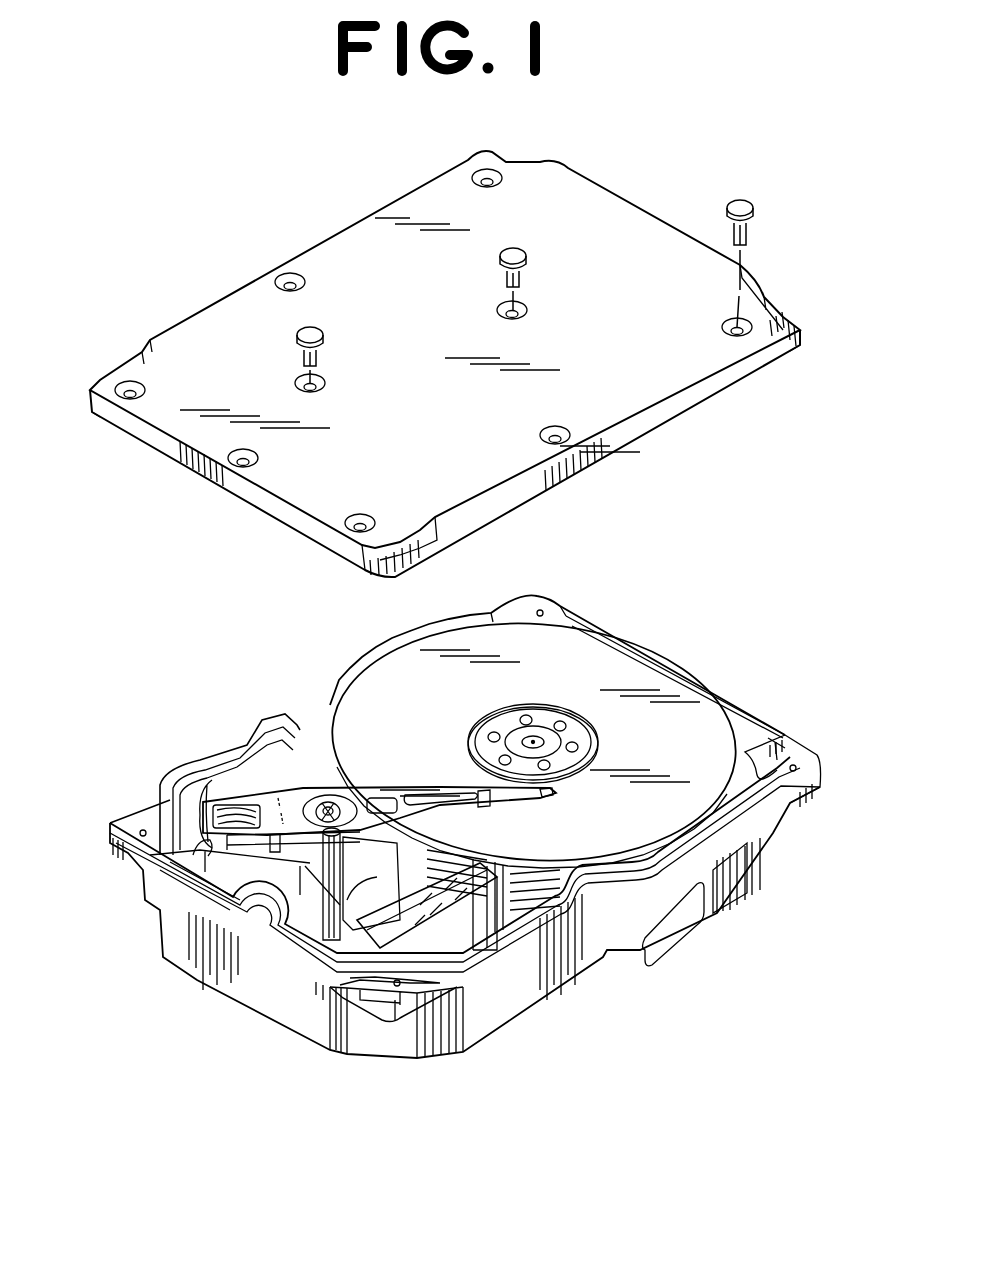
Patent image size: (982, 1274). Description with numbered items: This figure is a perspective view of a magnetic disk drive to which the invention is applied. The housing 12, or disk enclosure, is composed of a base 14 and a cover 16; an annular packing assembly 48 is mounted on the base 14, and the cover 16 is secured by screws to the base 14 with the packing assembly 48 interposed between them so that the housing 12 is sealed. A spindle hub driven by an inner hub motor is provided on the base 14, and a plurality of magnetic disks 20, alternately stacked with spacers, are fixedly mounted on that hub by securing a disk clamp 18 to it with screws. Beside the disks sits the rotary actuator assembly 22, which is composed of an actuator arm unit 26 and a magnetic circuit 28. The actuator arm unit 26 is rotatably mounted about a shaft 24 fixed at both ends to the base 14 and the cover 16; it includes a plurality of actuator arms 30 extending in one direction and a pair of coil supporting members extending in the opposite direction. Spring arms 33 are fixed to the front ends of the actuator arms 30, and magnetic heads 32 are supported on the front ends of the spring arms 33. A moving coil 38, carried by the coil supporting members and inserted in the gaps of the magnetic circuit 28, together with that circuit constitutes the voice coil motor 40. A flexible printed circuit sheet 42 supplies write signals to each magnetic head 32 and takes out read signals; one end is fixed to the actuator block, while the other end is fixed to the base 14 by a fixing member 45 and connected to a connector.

The housing 12 is at (512, 1032).
The base 14 is at (605, 955).
The cover 16 is at (576, 205).
The disk clamp 18 is at (548, 722).
The magnetic disks 20 is at (658, 678).
The rotary actuator assembly 22 is at (267, 782).
The shaft 24 is at (328, 805).
The actuator arm unit 26 is at (356, 778).
The magnetic circuit 28 is at (167, 790).
The actuator arms 30 is at (415, 790).
The magnetic heads 32 is at (548, 790).
The spring arms 33 is at (530, 804).
The moving coil 38 is at (240, 808).
The voice coil motor 40 is at (195, 845).
The flexible printed circuit sheet 42 is at (335, 935).
The fixing member 45 is at (478, 925).
The annular packing assembly 48 is at (775, 728).